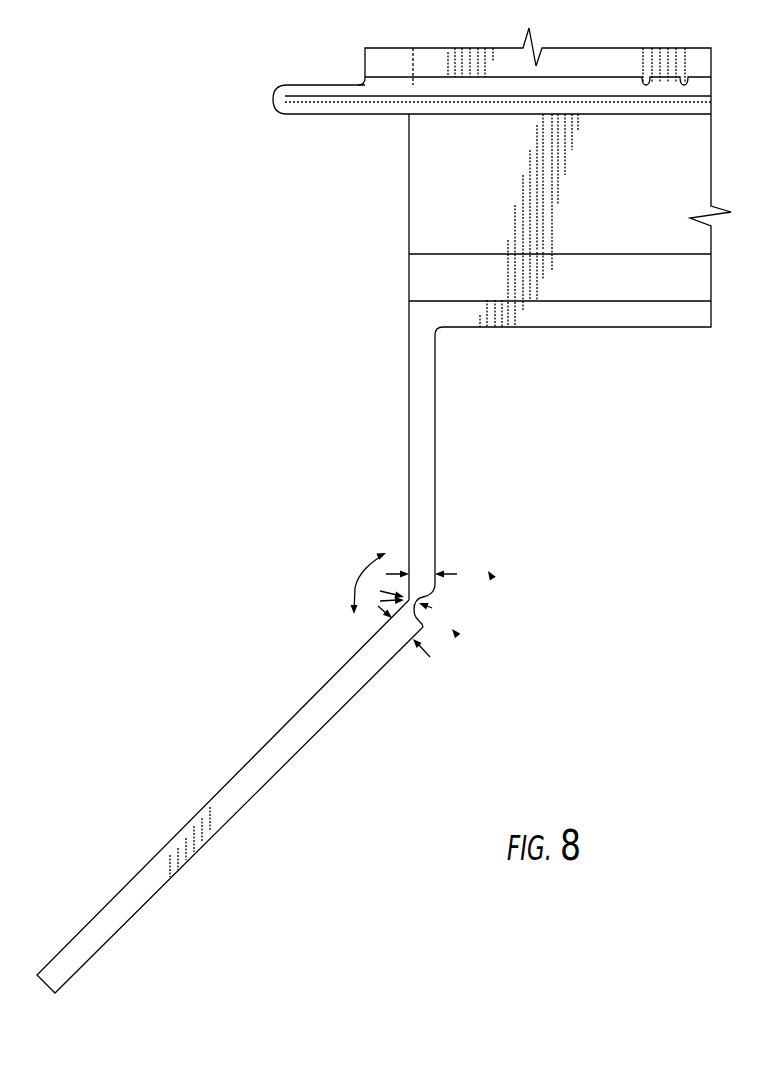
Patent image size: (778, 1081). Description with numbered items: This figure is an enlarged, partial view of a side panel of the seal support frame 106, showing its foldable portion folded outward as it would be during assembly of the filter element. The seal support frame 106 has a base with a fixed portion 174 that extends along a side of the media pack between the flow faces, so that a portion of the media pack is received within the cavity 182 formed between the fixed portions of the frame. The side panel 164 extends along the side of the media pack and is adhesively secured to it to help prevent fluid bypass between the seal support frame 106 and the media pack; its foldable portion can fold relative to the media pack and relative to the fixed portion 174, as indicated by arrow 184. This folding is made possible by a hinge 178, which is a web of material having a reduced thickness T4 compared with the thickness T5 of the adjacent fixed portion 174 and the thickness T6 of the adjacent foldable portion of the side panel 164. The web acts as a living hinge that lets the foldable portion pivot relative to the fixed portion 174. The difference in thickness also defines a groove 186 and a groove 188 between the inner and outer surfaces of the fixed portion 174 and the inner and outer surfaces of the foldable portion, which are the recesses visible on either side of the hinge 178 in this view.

The seal support frame 106 is at (437, 175).
The fixed portion 174 is at (409, 416).
The side panel 164 is at (360, 675).
The arrow 184 is at (355, 583).
The groove 188 is at (380, 600).
The cavity 182 is at (492, 577).
The hinge 178 is at (456, 635).
The groove 186 is at (433, 622).
The reduced thickness T4 is at (432, 608).
The thickness T5 is at (448, 574).
The thickness T6 is at (430, 657).